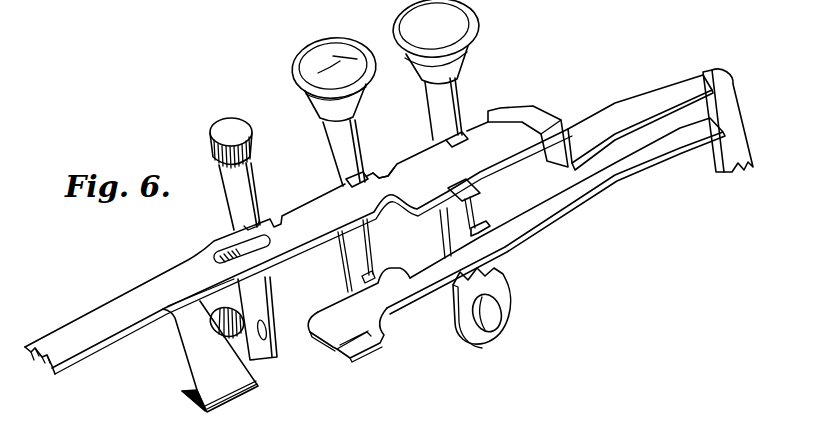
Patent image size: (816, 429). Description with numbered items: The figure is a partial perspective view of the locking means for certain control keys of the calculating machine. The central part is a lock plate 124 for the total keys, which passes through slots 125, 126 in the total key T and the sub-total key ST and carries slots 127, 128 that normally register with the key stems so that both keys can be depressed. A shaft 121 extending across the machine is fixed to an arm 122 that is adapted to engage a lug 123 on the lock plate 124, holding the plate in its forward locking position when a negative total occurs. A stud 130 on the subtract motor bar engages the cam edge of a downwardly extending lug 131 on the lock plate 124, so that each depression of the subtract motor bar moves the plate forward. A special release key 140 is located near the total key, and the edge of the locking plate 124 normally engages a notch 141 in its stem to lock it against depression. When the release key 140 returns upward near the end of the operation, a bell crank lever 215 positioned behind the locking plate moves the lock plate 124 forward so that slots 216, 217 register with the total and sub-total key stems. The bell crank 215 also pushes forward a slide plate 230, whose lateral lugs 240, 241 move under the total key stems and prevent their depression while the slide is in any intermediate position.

The shaft 121 is at (494, 308).
The arm 122 is at (480, 192).
The lug 123 is at (432, 190).
The lock plate 124 is at (118, 309).
The slot 125 is at (350, 178).
The slot 126 is at (449, 136).
The slot 127 is at (360, 188).
The slot 128 is at (444, 140).
The stud 130 is at (212, 323).
The lug 131 is at (206, 358).
The release key 140 is at (232, 126).
The notch 141 is at (248, 223).
The bell crank lever 215 is at (734, 128).
The slot 216 is at (397, 176).
The slot 217 is at (490, 112).
The slide plate 230 is at (637, 163).
The lateral lug 240 is at (409, 276).
The lateral lug 241 is at (478, 222).